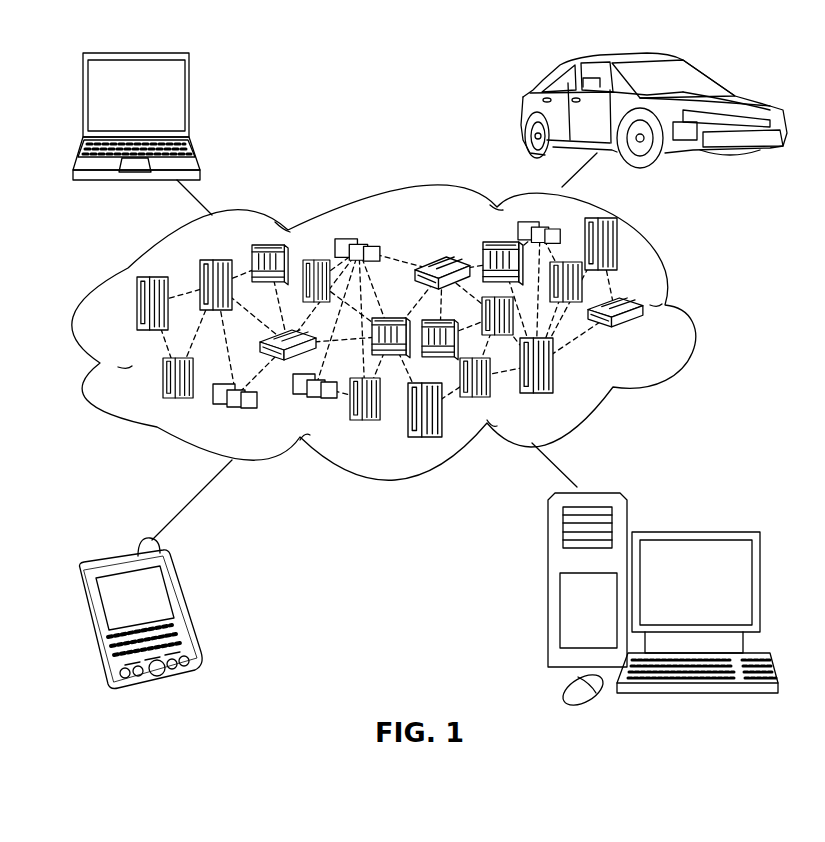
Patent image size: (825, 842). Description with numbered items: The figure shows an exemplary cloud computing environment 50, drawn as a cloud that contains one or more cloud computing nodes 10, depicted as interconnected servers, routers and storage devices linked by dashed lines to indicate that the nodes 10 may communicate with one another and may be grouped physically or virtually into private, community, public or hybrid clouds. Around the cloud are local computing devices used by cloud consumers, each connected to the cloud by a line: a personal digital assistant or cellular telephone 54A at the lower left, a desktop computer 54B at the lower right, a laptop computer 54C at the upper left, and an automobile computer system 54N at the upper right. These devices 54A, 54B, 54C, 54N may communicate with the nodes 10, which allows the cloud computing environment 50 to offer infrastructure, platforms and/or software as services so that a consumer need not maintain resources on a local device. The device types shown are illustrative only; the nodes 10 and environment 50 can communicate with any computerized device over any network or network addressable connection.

The cloud computing node 10 is at (648, 332).
The cloud computing environment 50 is at (695, 306).
The personal digital assistant or cellular telephone 54A is at (186, 607).
The desktop computer 54B is at (692, 532).
The laptop computer 54C is at (190, 101).
The automobile computer system 54N is at (522, 113).